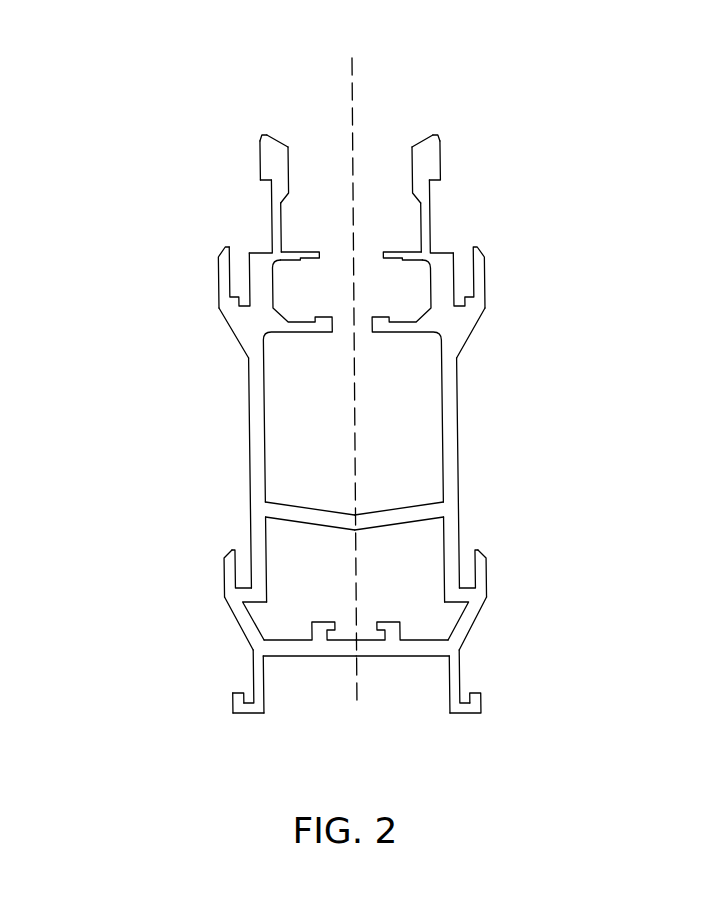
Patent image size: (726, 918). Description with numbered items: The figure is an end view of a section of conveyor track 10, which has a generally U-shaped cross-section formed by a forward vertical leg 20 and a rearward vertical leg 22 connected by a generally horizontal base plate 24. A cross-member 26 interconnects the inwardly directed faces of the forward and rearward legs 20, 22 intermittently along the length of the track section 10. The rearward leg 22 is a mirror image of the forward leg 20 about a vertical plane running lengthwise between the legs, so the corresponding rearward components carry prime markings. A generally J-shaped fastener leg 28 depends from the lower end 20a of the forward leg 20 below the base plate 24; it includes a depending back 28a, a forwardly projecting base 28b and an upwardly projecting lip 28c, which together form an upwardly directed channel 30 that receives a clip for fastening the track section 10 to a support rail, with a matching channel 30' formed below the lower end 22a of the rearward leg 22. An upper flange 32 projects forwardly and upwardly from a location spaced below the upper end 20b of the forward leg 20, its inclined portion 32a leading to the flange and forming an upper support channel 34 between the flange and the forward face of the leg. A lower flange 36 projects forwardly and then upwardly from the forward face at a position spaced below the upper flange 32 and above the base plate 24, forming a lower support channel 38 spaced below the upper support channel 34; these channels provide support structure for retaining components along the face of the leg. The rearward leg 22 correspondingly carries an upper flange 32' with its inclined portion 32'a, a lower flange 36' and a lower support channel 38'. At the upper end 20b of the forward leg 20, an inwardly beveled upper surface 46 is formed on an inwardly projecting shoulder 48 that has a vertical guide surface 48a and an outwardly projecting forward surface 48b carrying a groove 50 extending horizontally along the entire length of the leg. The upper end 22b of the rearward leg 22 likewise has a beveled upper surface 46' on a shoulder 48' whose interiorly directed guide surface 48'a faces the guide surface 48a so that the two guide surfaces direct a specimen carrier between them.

The track section 10 is at (384, 421).
The forward vertical leg 20 is at (258, 427).
The lower end of forward leg 20a is at (248, 635).
The upper end of forward leg 20b is at (268, 158).
The rearward vertical leg 22 is at (455, 438).
The lower end of rearward leg 22a is at (468, 627).
The upper end of rearward leg 22b is at (442, 167).
The base plate 24 is at (347, 652).
The cross-member 26 is at (445, 527).
The fastener leg 28 is at (250, 672).
The depending back 28a is at (264, 690).
The forwardly projecting base 28b is at (249, 713).
The upwardly projecting lip 28c is at (236, 710).
The channel 30 is at (199, 706).
The channel 30' is at (519, 694).
The upper flange 32 is at (183, 289).
The upper flange 32' is at (530, 277).
The inclined portion of upper flange 32a is at (237, 328).
The inclined portion of upper flange 32'a is at (536, 333).
The upper support channel 34 is at (242, 263).
The lower flange 36 is at (165, 565).
The lower flange 36' is at (539, 573).
The lower support channel 38 is at (202, 538).
The lower support channel 38' is at (518, 548).
The inwardly beveled upper surface 46 is at (256, 98).
The inwardly beveled upper surface 46' is at (453, 95).
The shoulder 48 is at (311, 143).
The shoulder 48' is at (506, 158).
The vertical guide surface 48a is at (291, 184).
The vertical guide surface 48'a is at (408, 144).
The outwardly projecting forward surface 48b is at (263, 168).
The groove 50 is at (260, 142).